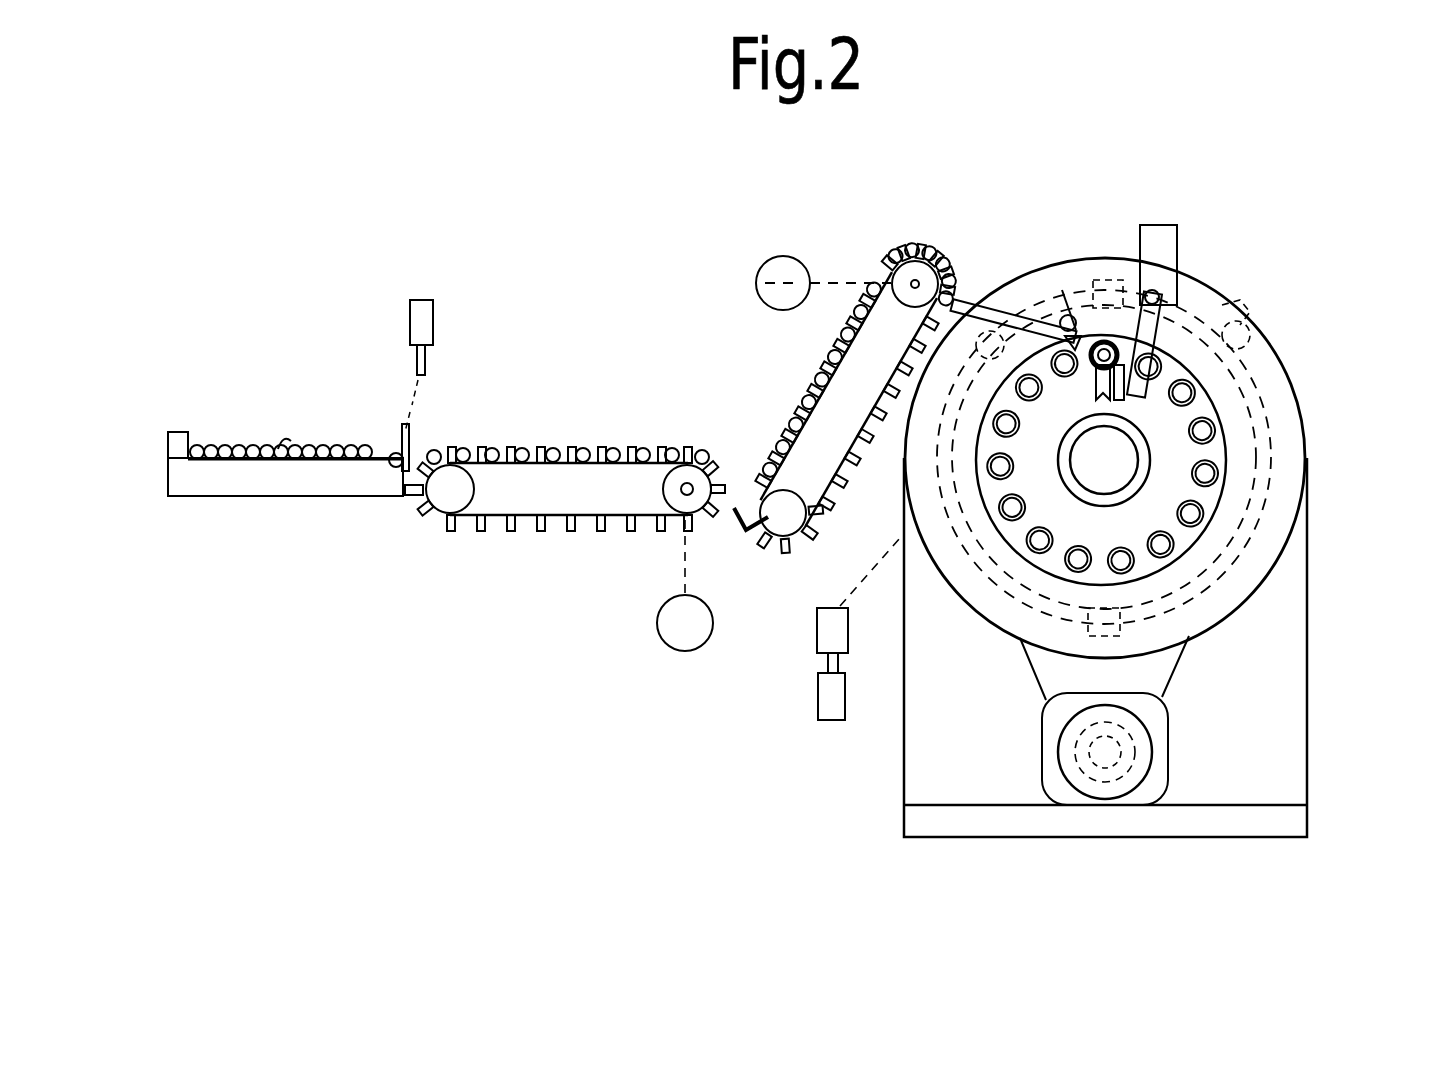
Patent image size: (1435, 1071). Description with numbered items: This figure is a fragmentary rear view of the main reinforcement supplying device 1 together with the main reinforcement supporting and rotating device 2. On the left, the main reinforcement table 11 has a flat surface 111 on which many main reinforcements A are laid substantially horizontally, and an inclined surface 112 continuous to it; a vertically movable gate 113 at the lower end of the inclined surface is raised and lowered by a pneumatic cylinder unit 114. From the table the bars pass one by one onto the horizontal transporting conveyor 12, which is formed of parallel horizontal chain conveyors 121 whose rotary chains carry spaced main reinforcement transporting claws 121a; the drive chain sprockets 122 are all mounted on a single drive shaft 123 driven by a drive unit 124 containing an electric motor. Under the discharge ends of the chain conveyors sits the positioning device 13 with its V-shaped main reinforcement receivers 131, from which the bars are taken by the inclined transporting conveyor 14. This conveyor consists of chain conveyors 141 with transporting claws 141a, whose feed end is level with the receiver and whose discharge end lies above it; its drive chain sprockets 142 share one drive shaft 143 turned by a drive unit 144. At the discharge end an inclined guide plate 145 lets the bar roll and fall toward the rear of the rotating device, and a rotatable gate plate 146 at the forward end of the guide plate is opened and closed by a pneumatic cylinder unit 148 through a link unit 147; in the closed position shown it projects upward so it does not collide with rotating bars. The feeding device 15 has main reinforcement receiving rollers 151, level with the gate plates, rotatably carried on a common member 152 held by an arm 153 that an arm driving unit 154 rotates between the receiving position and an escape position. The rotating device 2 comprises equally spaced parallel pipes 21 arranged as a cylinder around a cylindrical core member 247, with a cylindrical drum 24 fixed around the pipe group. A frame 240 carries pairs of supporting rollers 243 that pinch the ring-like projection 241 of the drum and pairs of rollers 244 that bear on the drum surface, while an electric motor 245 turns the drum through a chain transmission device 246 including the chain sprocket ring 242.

The main reinforcement supplying device 1 is at (563, 248).
The main reinforcement supporting and rotating device 2 is at (1356, 186).
The main reinforcement table 11 is at (235, 510).
The flat surface 111 is at (298, 462).
The inclined surface 112 is at (403, 472).
The vertically movable gate 113 is at (406, 470).
The pneumatic cylinder unit 114 is at (422, 300).
The horizontal transporting conveyor 12 is at (523, 605).
The horizontal chain conveyor 121 is at (495, 520).
The main reinforcement transporting claws 121a is at (535, 440).
The drive chain sprockets 122 is at (680, 492).
The drive shaft 123 is at (668, 520).
The drive unit 124 is at (662, 648).
The positioning device 13 is at (760, 578).
The V-shaped main reinforcement receivers 131 is at (740, 532).
The inclined transporting conveyor 14 is at (746, 380).
The chain conveyor 141 is at (833, 455).
The main reinforcement transporting claws 141a is at (758, 462).
The drive chain sprockets 142 is at (895, 262).
The drive shaft 143 is at (915, 268).
The drive unit 144 is at (768, 266).
The inclined guide plate 145 is at (984, 305).
The rotatable gate plate 146 is at (1075, 327).
The link unit 147 is at (815, 640).
The pneumatic cylinder unit 148 is at (818, 712).
The main reinforcement feeding device 15 is at (1162, 390).
The main reinforcement receiving rollers 151 is at (1250, 318).
The common member 152 is at (1228, 448).
The arm 153 is at (1220, 282).
The arm driving unit 154 is at (1163, 226).
The parallel pipes 21 is at (1100, 335).
The cylindrical drum 24 is at (1285, 527).
The frame 240 is at (1290, 485).
The ring-like projection 241 is at (1240, 630).
The chain sprocket ring 242 is at (1023, 653).
The supporting rollers 243 is at (1120, 262).
The rollers 244 is at (977, 305).
The electric motor 245 is at (1147, 797).
The chain transmission device 246 is at (1163, 693).
The cylindrical core member 247 is at (1145, 483).
The main reinforcement A is at (214, 445).